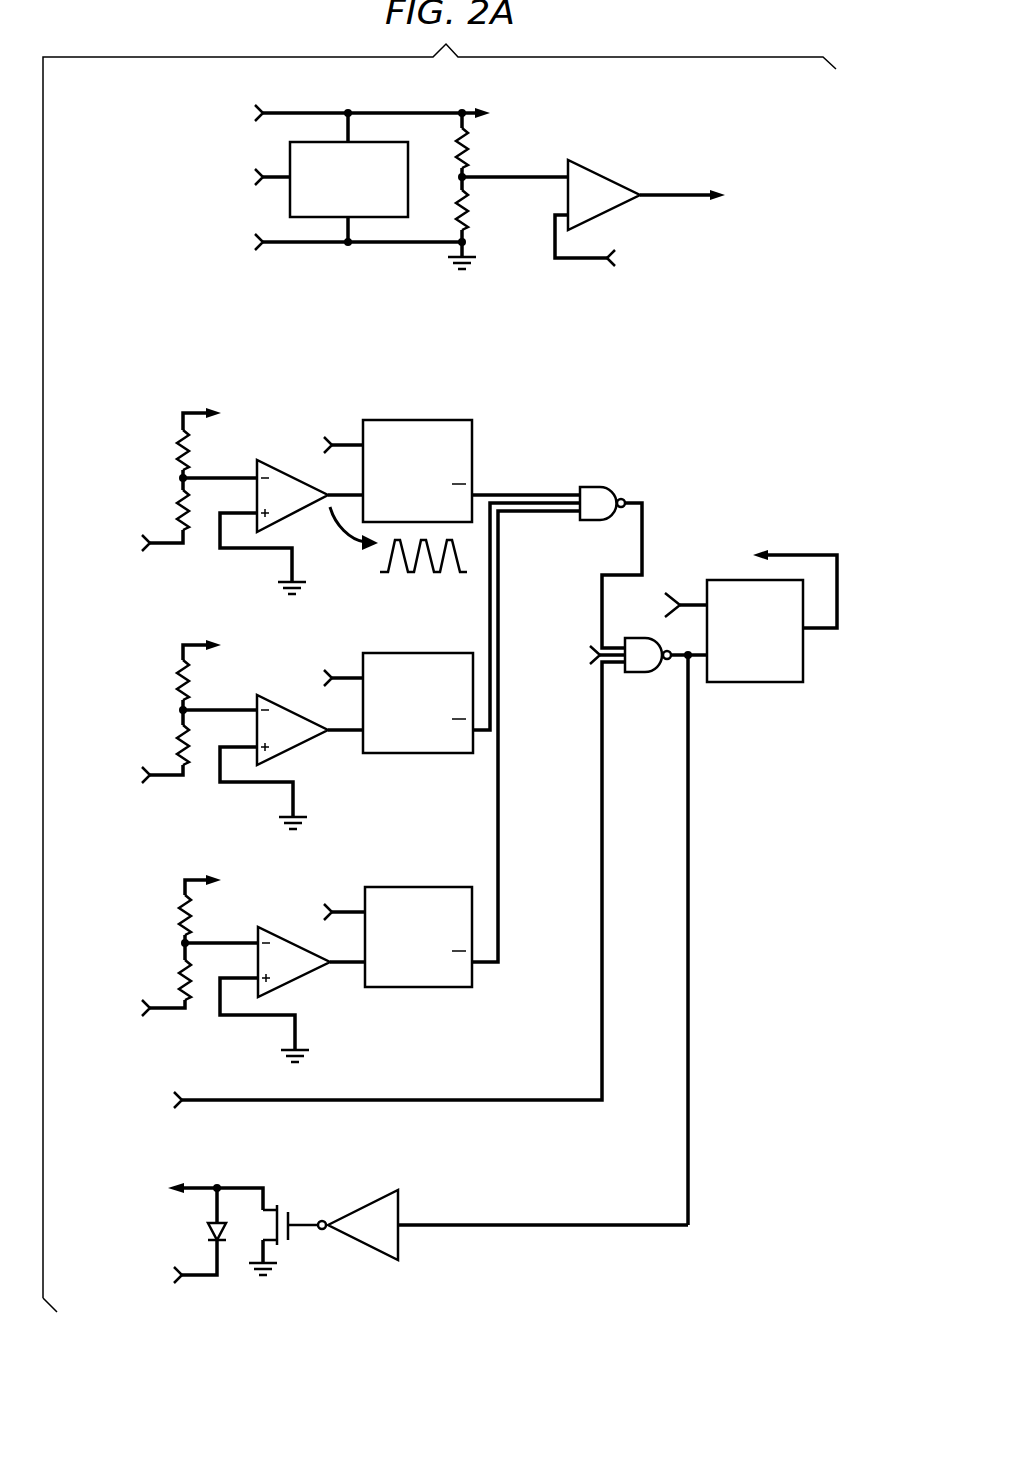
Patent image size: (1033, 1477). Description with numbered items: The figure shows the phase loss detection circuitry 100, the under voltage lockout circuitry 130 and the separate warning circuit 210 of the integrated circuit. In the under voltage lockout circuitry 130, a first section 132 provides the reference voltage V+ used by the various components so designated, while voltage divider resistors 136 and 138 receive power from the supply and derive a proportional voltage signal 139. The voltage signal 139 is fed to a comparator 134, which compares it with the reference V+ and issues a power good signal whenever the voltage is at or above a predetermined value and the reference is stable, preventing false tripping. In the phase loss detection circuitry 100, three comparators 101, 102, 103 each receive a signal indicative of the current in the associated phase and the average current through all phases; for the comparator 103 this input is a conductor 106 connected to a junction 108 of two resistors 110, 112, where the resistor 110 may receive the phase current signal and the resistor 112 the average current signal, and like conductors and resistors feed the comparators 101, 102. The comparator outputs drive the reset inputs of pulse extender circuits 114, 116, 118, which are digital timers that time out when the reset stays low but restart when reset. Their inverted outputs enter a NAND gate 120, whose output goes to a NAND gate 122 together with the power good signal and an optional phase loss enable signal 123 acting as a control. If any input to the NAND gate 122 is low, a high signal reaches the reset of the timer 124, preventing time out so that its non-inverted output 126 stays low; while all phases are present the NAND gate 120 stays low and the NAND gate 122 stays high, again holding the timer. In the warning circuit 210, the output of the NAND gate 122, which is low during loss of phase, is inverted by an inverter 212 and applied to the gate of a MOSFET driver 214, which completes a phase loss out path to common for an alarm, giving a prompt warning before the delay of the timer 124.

The phase loss detection circuitry 100 is at (128, 440).
The comparator 101 is at (297, 514).
The comparator 102 is at (298, 748).
The comparator 103 is at (300, 980).
The conductor 106 is at (201, 940).
The junction 108 is at (180, 943).
The resistor 110 is at (178, 978).
The resistor 112 is at (177, 905).
The pulse extender circuit 114 is at (475, 455).
The pulse extender circuit 116 is at (415, 653).
The pulse extender circuit 118 is at (417, 887).
The NAND gate 120 is at (592, 487).
The NAND gate 122 is at (631, 672).
The phase loss enable signal 123 is at (206, 1097).
The timer 124 is at (750, 682).
The non-inverted output 126 is at (805, 552).
The under voltage lockout circuitry 130 is at (345, 103).
The first section 132 is at (378, 217).
The comparator 134 is at (625, 180).
The voltage divider resistor 136 is at (470, 140).
The voltage divider resistor 138 is at (470, 212).
The voltage signal 139 is at (548, 180).
The warning circuit 210 is at (281, 1305).
The inverter 212 is at (400, 1240).
The MOSFET driver 214 is at (300, 1217).